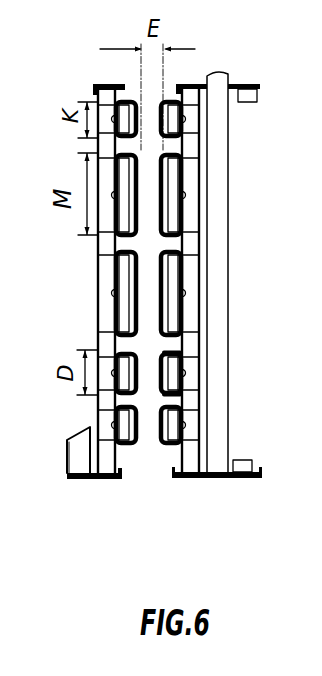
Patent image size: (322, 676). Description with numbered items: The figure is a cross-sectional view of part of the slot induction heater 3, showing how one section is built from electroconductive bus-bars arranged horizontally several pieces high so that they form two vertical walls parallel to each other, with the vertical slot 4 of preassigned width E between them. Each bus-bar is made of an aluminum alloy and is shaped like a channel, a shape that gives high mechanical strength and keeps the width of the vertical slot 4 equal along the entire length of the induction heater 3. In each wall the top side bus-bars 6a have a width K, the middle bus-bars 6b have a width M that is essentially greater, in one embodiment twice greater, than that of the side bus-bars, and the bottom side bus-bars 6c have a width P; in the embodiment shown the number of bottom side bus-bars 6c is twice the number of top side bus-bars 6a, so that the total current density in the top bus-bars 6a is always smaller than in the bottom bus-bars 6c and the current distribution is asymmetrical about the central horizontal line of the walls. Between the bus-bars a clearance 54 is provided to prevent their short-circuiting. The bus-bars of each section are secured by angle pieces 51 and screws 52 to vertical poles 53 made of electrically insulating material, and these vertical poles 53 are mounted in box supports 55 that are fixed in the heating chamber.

The slot induction heater 3 is at (194, 78).
The vertical slot 4 is at (147, 433).
The top side bus-bars 6a is at (183, 132).
The middle bus-bars 6b is at (165, 183).
The bottom side bus-bars 6c is at (123, 365).
The angle pieces 51 is at (192, 208).
The screws 52 is at (187, 294).
The vertical poles 53 is at (217, 445).
The clearance 54 is at (168, 398).
The box supports 55 is at (247, 480).